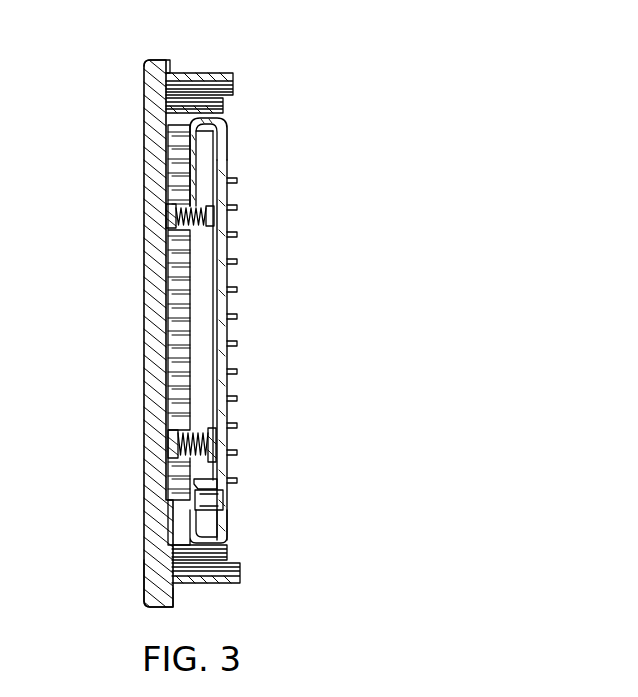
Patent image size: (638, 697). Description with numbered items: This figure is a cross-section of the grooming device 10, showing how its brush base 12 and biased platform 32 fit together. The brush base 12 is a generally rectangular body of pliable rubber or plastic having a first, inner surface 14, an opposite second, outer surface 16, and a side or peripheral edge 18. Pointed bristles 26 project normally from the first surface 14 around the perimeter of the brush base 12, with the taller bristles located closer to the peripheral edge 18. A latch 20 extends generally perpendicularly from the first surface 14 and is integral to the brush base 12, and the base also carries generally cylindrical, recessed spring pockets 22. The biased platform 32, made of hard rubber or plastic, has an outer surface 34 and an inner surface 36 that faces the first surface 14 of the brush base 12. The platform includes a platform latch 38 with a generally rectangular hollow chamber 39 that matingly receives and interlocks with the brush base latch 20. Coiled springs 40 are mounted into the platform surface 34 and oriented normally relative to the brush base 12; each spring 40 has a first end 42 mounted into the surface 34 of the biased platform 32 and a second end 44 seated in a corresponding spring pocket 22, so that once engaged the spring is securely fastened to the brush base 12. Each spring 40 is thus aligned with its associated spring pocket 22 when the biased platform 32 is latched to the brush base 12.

The grooming device 10 is at (311, 189).
The brush base 12 is at (223, 145).
The first, inner surface 14 is at (167, 563).
The second, outer surface 16 is at (162, 190).
The peripheral edge 18 is at (152, 58).
The latch 20 is at (215, 516).
The spring pocket 22 is at (163, 210).
The bristles 26 is at (226, 261).
The biased platform 32 is at (226, 298).
The outer surface 34 is at (227, 342).
The inner surface 36 is at (185, 340).
The platform latch 38 is at (217, 482).
The hollow chamber 39 is at (215, 500).
The spring 40 is at (222, 211).
The first end 42 is at (218, 450).
The second end 44 is at (168, 432).